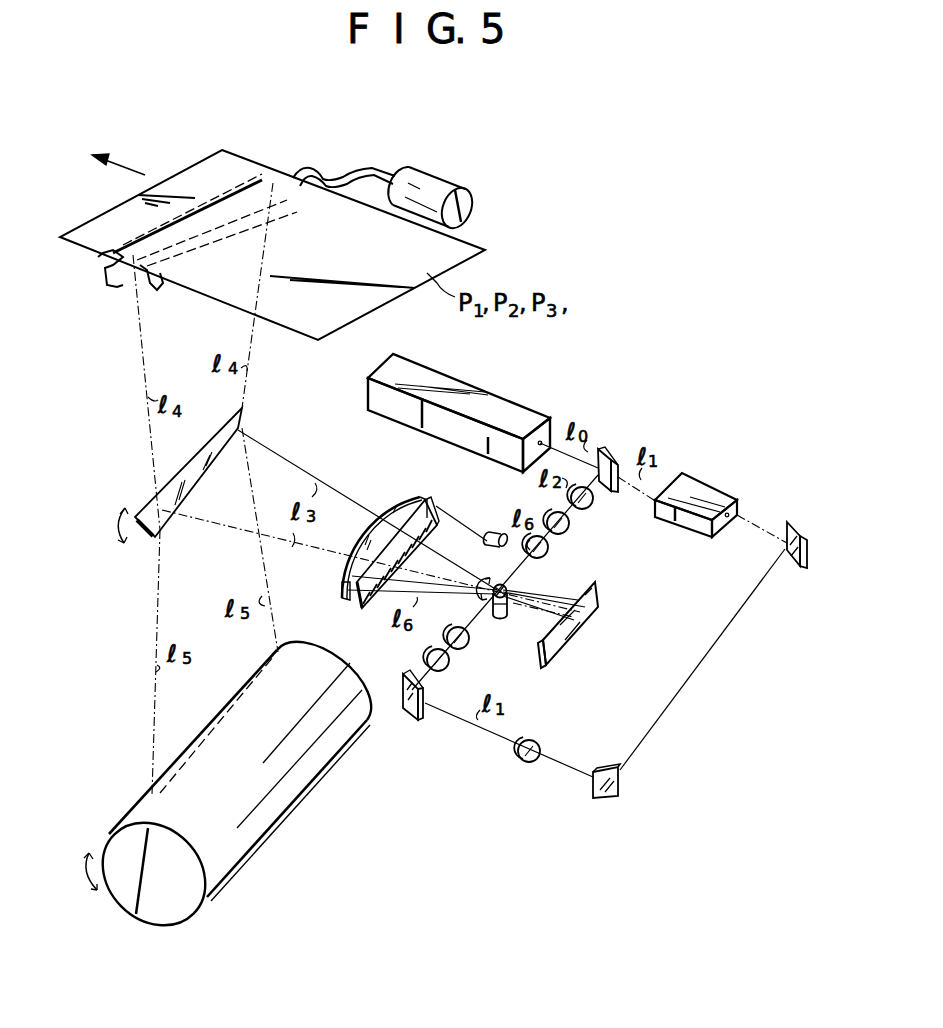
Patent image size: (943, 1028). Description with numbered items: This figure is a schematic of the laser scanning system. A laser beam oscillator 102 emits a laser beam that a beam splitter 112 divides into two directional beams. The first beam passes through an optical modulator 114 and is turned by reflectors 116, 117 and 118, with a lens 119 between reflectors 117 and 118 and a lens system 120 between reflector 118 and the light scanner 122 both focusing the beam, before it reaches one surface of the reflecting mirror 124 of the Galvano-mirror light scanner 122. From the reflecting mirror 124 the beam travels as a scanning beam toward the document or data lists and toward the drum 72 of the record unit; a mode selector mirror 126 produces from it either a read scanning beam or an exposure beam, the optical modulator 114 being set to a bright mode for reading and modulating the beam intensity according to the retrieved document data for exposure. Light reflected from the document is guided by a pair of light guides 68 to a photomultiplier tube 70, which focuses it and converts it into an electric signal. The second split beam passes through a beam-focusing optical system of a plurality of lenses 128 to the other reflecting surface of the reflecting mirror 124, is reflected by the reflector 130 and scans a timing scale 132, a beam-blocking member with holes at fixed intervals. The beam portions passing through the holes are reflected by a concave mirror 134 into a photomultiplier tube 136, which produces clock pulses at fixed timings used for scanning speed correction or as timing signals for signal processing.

The light guides 68 is at (114, 283).
The photomultiplier tube 70 is at (473, 203).
The drum 72 is at (150, 913).
The laser beam oscillator 102 is at (510, 407).
The beam splitter 112 is at (600, 449).
The optical modulator 114 is at (702, 484).
The reflector 116 is at (790, 522).
The reflector 117 is at (602, 798).
The reflector 118 is at (410, 718).
The lens 119 is at (523, 760).
The lens system 120 is at (478, 640).
The light scanner 122 is at (501, 617).
The reflecting mirror 124 is at (510, 590).
The mode selector mirror 126 is at (267, 406).
The lenses 128 is at (603, 503).
The reflector 130 is at (573, 627).
The timing scale 132 is at (437, 510).
The concave mirror 134 is at (395, 500).
The photomultiplier tube 136 is at (493, 531).